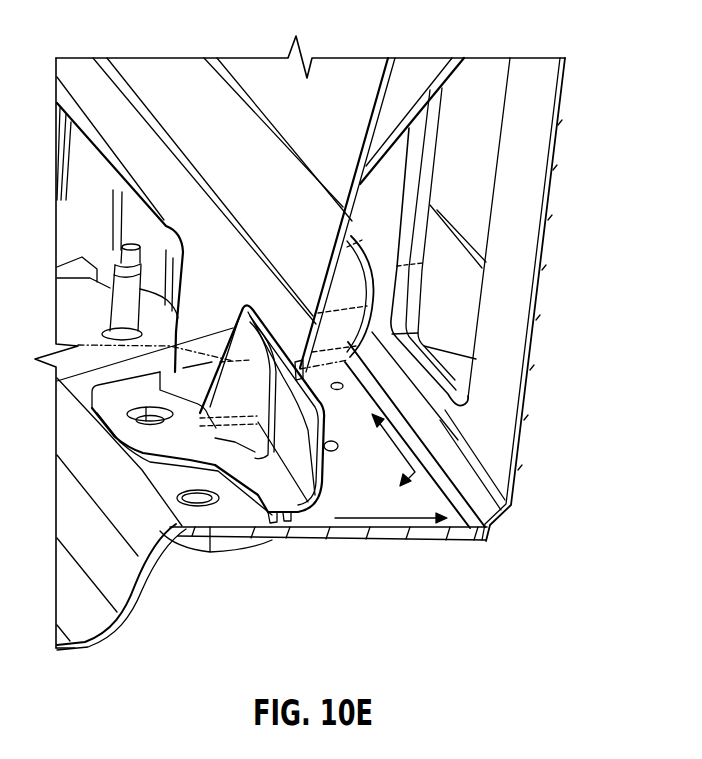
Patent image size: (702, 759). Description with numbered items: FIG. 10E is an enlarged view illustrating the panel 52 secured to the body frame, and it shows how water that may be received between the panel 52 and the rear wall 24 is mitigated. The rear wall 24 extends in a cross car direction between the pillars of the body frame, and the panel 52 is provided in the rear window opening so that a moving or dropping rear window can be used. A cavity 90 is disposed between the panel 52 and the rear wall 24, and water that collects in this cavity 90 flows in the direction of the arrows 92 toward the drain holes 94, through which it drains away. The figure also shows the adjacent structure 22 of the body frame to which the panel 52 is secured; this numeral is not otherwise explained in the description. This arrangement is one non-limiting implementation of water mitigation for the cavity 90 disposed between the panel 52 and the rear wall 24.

The first panel 22 is at (80, 537).
The rear wall 24 is at (487, 123).
The panel 52 is at (178, 84).
The cavity 90 is at (416, 471).
The arrows 92 is at (458, 485).
The drain holes 94 is at (340, 383).